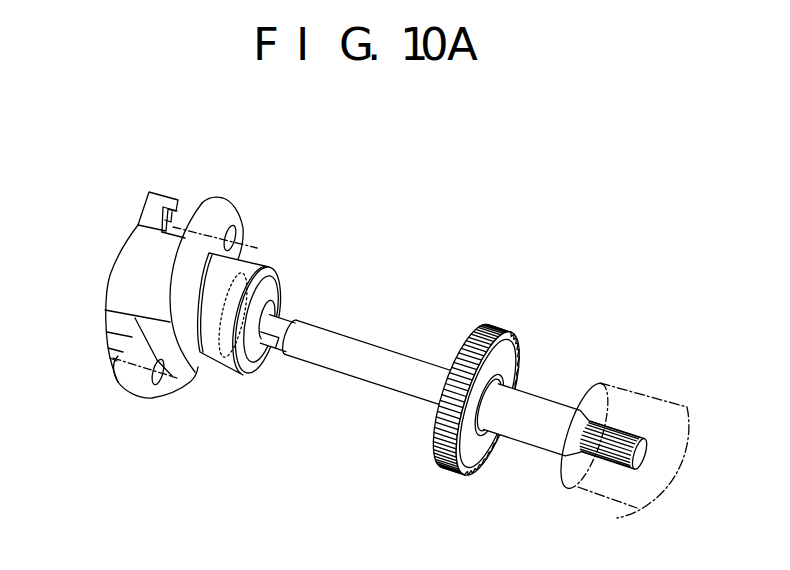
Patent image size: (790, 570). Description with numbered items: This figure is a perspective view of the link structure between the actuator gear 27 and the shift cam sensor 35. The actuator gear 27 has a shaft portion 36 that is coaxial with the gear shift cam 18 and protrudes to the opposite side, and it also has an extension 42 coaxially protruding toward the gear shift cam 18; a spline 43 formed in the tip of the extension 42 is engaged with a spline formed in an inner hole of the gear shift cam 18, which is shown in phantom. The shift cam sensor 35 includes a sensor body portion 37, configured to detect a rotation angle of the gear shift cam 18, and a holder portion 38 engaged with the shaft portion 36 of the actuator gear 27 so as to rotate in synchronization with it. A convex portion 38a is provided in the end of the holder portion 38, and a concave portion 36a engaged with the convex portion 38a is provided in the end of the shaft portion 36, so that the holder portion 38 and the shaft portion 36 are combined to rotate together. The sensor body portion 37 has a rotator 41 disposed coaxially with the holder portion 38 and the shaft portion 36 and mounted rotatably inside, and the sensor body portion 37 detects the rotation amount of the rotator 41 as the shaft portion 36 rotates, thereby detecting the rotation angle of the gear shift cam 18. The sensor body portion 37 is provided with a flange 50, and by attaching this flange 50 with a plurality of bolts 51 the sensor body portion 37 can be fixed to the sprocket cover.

The gear shift cam 18 is at (652, 380).
The actuator gear 27 is at (453, 471).
The shift cam sensor 35 is at (106, 276).
The shaft portion 36 is at (396, 351).
The concave portion 36a is at (298, 346).
The sensor body portion 37 is at (168, 253).
The holder portion 38 is at (262, 281).
The convex portion 38a is at (255, 352).
The rotator 41 is at (278, 298).
The extension 42 is at (543, 398).
The spline 43 is at (608, 410).
The flange 50 is at (224, 215).
The bolts 51 is at (258, 232).